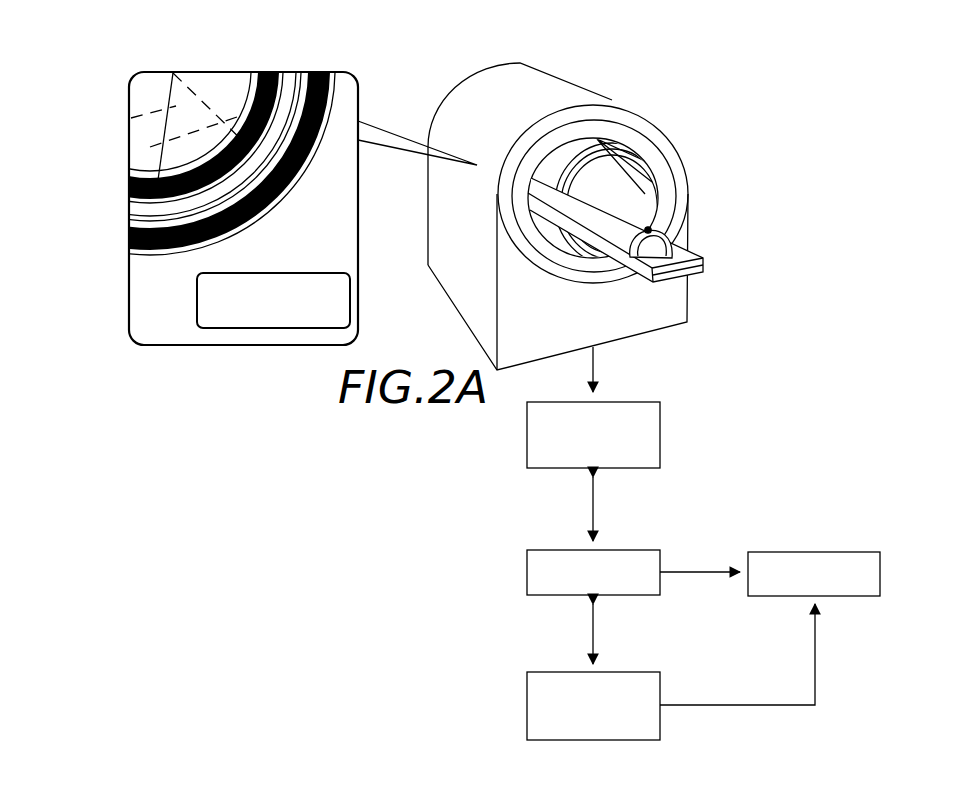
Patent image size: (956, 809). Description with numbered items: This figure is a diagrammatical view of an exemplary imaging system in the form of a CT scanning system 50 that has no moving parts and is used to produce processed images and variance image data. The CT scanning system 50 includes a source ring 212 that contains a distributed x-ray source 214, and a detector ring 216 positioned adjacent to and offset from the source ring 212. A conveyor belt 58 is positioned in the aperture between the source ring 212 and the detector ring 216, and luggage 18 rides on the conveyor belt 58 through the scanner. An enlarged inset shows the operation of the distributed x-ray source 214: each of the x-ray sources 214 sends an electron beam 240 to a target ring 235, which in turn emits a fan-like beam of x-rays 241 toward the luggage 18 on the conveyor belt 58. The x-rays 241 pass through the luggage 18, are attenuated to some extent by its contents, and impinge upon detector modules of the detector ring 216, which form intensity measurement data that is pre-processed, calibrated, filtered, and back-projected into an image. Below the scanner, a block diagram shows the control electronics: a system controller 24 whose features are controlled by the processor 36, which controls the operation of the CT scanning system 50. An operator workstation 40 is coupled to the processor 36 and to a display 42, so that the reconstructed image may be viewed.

The CT scanning system 50 is at (696, 108).
The source ring 212 is at (490, 100).
The detector ring 216 is at (639, 166).
The luggage 18 is at (679, 227).
The conveyor belt 58 is at (690, 272).
The x-rays 241 is at (153, 103).
The target ring 235 is at (132, 187).
The electron beam 240 is at (132, 217).
The distributed x-ray source 214 is at (157, 262).
The system controller 24 is at (527, 439).
The processor 36 is at (527, 573).
The display 42 is at (804, 552).
The operator workstation 40 is at (527, 713).